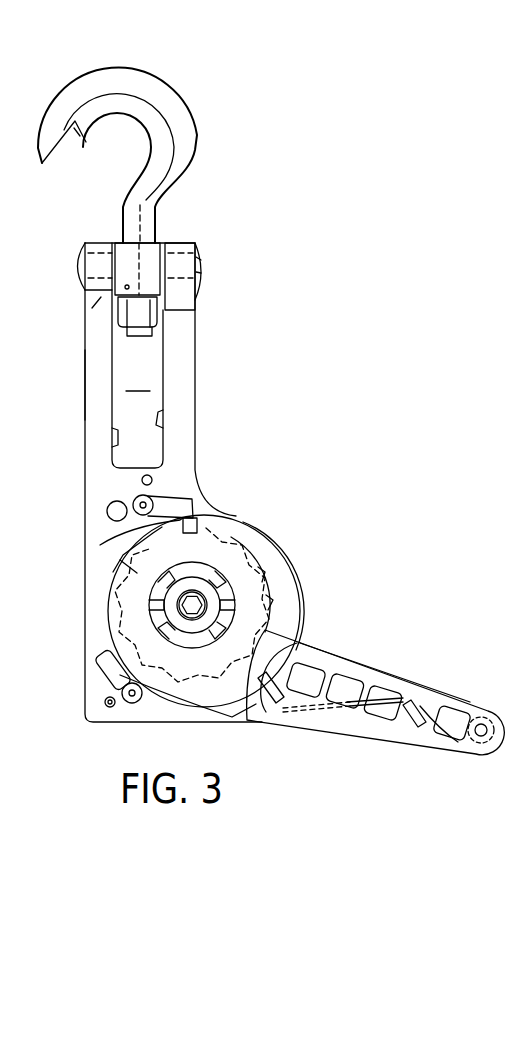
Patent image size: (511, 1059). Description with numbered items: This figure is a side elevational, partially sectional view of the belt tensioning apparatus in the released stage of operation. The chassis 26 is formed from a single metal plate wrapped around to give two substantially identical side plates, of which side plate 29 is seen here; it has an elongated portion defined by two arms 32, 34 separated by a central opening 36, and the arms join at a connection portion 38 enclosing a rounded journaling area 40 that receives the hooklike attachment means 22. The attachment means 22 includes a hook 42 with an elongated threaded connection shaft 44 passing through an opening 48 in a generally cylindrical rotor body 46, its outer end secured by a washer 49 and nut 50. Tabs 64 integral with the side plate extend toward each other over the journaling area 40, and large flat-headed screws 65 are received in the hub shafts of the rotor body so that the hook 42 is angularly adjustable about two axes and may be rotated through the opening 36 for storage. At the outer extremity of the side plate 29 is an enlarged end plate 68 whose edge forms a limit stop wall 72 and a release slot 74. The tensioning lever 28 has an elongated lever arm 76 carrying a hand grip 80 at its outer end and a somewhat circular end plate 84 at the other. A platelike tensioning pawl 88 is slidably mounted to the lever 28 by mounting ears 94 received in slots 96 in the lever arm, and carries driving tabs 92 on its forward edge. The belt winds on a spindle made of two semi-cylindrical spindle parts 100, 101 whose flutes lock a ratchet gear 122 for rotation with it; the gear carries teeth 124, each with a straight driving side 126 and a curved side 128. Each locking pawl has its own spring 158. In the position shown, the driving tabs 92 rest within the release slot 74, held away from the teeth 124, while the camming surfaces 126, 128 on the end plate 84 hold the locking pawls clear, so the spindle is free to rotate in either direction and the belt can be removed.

The hooklike attachment means 22 is at (219, 118).
The hook 42 is at (88, 152).
The journaling area 40 is at (104, 242).
The connection portion 38 is at (183, 238).
The tabs 64 is at (86, 250).
The flat-headed screws 65 is at (204, 262).
The rotor body 46 is at (130, 268).
The opening 48 is at (92, 308).
The washer 49 is at (196, 305).
The nut 50 is at (145, 310).
The threaded connection shaft 44 is at (145, 337).
The side plate 29 is at (93, 386).
The chassis 26 is at (86, 424).
The central opening 36 is at (137, 379).
The arm 34 is at (163, 414).
The arm 32 is at (117, 445).
The spring 158 is at (152, 484).
The straight driving side 126 is at (140, 522).
The teeth 124 is at (264, 490).
The limit stop wall 72 is at (277, 546).
The second ratchet gear 122 is at (291, 556).
The end plate 68 is at (301, 612).
The first spindle part 100 is at (150, 597).
The second spindle part 101 is at (203, 642).
The end plate 84 is at (222, 695).
The curved side 128 is at (101, 660).
The tensioning lever 28 is at (433, 690).
The release slot 74 is at (296, 652).
The lever arm 76 is at (375, 670).
The hand grip 80 is at (481, 718).
The driving tabs 92 is at (260, 703).
The tensioning pawl 88 is at (347, 707).
The mounting ears 94 is at (409, 722).
The slots 96 is at (424, 724).